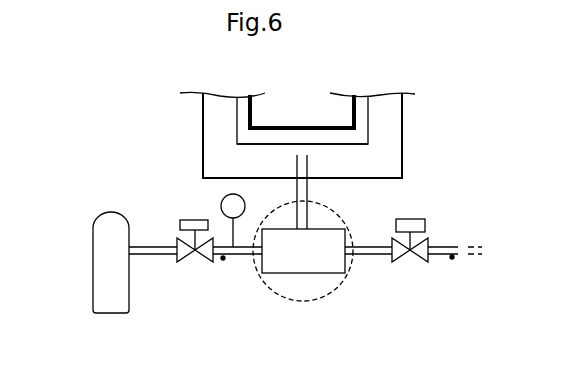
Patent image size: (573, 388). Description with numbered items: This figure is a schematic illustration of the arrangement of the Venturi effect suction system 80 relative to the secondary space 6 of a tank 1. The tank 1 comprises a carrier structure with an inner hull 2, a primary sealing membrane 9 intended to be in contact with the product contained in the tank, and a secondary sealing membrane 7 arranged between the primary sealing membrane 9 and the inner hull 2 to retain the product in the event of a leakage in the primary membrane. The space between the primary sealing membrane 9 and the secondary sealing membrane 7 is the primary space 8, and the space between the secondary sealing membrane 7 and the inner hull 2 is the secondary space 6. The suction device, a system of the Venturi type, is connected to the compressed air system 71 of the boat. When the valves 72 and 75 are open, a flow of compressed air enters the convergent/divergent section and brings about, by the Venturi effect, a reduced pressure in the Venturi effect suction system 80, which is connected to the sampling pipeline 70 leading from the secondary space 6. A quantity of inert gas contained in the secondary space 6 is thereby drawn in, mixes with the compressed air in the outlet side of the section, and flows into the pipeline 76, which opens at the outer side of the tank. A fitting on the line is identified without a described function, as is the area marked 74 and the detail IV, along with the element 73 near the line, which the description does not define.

The tank 1 is at (413, 104).
The inner hull 2 is at (404, 125).
The secondary space 6 is at (387, 160).
The secondary sealing membrane 7 is at (237, 126).
The primary space 8 is at (240, 143).
The primary sealing membrane 9 is at (248, 100).
The sampling pipeline 70 is at (310, 189).
The compressed air system 71 is at (93, 269).
The valve 72 is at (185, 263).
The pressure gauge 73 is at (221, 206).
The gas line 74 is at (223, 260).
The valve 75 is at (403, 263).
The pipeline 76 is at (452, 259).
The Venturi effect suction system 80 is at (322, 273).
The detail IV is at (252, 272).